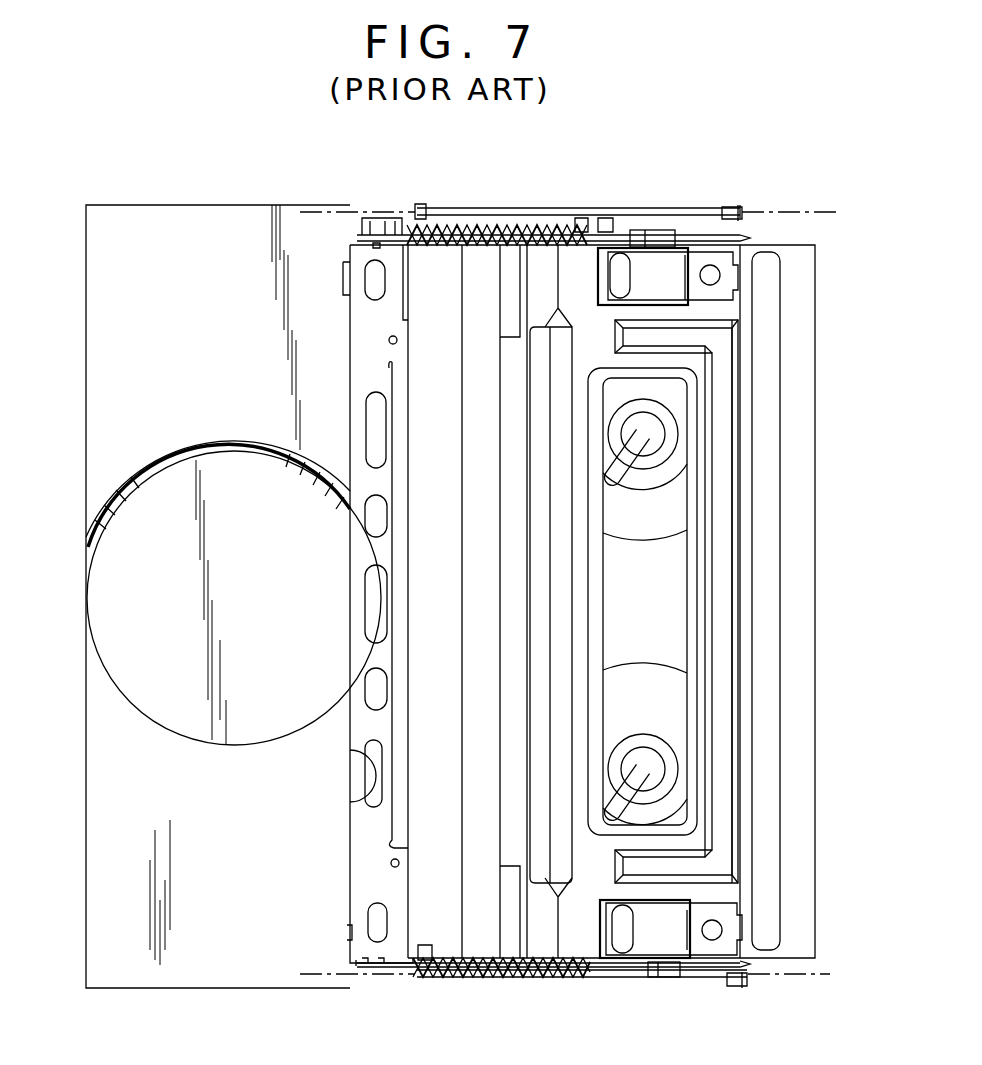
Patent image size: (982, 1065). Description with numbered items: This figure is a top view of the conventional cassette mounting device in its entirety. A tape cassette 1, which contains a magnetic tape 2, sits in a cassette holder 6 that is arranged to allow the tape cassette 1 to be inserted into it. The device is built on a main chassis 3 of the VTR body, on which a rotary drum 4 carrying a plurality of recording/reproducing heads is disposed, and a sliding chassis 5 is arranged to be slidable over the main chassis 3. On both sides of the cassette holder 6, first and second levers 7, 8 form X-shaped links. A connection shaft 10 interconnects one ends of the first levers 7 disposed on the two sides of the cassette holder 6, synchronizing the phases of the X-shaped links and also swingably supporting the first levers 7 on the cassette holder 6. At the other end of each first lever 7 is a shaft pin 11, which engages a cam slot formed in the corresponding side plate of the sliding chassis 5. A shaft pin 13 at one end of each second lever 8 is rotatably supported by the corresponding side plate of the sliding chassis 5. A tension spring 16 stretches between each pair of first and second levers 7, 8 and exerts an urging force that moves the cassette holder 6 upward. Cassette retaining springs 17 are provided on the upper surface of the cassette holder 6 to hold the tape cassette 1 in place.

The tape cassette 1 is at (808, 554).
The magnetic tape 2 is at (683, 690).
The main chassis 3 is at (136, 975).
The rotary drum 4 is at (102, 604).
The sliding chassis 5 is at (800, 986).
The cassette holder 6 is at (580, 940).
The first lever 7 is at (632, 230).
The second lever 8 is at (581, 212).
The connection shaft 10 is at (372, 805).
The shaft pin 11 is at (737, 207).
The shaft pin 13 is at (420, 206).
The tension spring 16 is at (508, 228).
The cassette retaining spring 17 is at (675, 270).